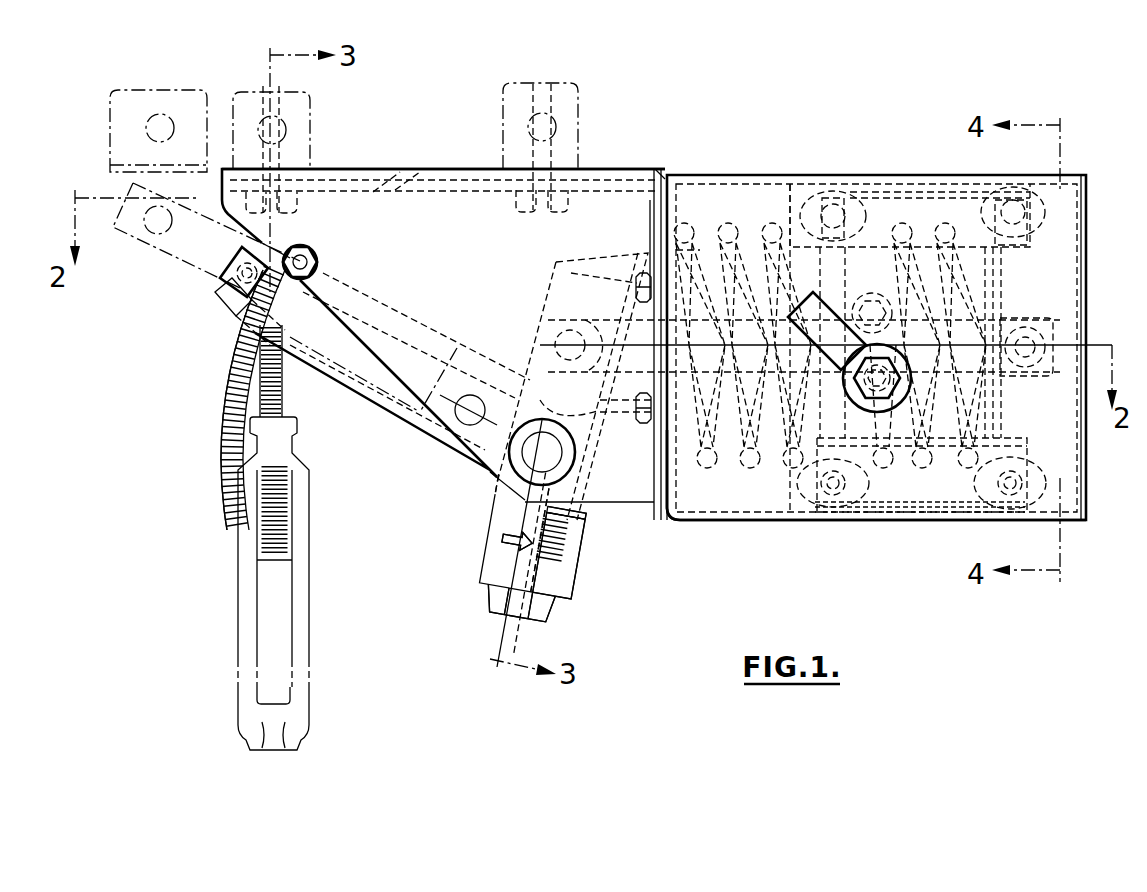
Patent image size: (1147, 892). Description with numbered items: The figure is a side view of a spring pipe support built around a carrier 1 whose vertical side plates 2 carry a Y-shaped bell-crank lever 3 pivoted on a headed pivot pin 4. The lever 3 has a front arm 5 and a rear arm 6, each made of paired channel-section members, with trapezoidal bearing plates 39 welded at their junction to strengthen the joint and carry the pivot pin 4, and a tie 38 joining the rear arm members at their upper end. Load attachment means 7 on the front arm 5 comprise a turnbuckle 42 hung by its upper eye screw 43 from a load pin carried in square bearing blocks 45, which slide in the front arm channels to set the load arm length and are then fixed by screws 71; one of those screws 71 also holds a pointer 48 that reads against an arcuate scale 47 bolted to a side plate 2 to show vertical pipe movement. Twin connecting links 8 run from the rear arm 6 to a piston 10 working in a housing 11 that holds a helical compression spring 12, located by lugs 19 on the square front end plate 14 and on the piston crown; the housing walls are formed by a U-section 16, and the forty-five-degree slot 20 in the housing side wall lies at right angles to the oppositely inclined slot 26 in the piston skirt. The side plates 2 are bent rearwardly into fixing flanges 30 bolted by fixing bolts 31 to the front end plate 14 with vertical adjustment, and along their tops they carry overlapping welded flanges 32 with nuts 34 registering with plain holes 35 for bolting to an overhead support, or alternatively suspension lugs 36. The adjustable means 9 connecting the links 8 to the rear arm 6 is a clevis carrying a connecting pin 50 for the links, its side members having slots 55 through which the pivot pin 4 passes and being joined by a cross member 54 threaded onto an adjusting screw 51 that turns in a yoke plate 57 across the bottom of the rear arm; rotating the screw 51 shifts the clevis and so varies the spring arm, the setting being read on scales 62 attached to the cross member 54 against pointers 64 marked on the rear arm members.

The carrier 1 is at (432, 165).
The side plates 2 is at (407, 250).
The bell-crank lever 3 is at (393, 392).
The headed pivot pin 4 is at (507, 470).
The front arm 5 is at (358, 378).
The rear arm 6 is at (482, 557).
The load attachment means 7 is at (250, 640).
The twin connecting links 8 is at (1030, 320).
The adjustable means 9 is at (590, 470).
The piston 10 is at (917, 507).
The housing 11 is at (732, 523).
The helical compression spring 12 is at (738, 225).
The front end plate 14 is at (672, 195).
The U-section 16 is at (1070, 218).
The lugs 19 is at (700, 232).
The closed-ended slot 20 is at (793, 305).
The closed-ended slot 26 is at (967, 247).
The fixing flange 30 is at (657, 203).
The fixing bolts 31 is at (637, 277).
The flanges 32 is at (393, 170).
The nuts 34 is at (302, 217).
The plain holes 35 is at (292, 200).
The suspension lugs 36 is at (110, 118).
The tie 38 is at (660, 237).
The bearing plates 39 is at (520, 373).
The turnbuckle 42 is at (250, 592).
The upper eye screw 43 is at (260, 382).
The square bearing blocks 45 is at (292, 365).
The arcuate scale 47 is at (230, 405).
The pointer 48 is at (220, 277).
The connecting pin 50 is at (537, 337).
The adjusting screw 51 is at (497, 537).
The cross member 54 is at (500, 510).
The slots 55 is at (560, 418).
The yoke plate 57 is at (547, 605).
The scales 62 is at (557, 558).
The pointers 64 is at (535, 530).
The screws 71 is at (233, 307).